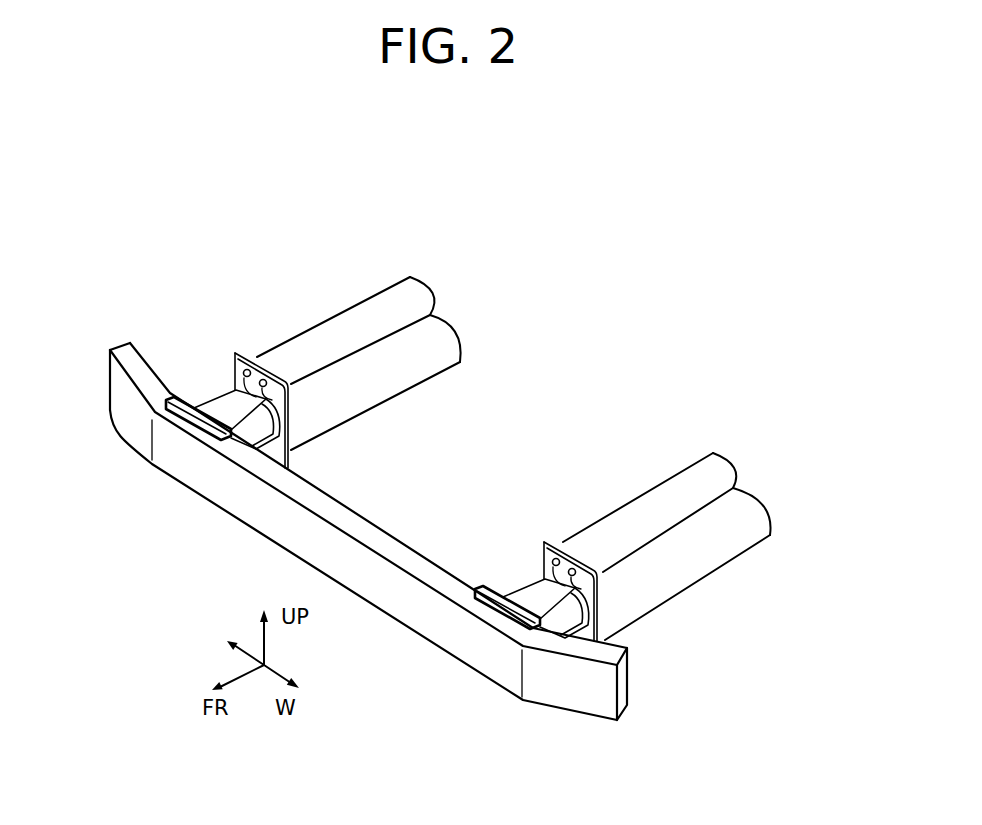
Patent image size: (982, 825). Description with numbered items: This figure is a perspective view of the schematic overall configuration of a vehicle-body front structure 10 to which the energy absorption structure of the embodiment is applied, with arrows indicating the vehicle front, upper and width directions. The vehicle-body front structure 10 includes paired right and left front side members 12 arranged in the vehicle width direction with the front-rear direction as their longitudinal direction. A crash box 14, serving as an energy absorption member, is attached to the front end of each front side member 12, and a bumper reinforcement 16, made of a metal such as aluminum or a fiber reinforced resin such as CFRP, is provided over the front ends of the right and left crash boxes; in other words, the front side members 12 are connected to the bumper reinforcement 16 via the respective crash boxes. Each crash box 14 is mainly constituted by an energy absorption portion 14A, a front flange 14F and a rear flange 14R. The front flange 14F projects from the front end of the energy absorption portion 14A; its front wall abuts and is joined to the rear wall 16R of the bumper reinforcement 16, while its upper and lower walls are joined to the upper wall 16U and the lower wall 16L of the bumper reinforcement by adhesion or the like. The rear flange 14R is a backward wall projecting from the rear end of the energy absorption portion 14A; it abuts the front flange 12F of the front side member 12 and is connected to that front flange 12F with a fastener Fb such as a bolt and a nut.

The vehicle-body front structure 10 is at (598, 352).
The front side member 12 is at (343, 306).
The front flange 12F is at (257, 356).
The crash box 14 is at (410, 472).
The energy absorption portion 14A is at (223, 403).
The front flange 14F is at (178, 402).
The rear flange 14R is at (284, 418).
The bumper reinforcement 16 is at (368, 531).
The upper wall 16U is at (384, 540).
The rear wall 16R is at (356, 507).
The lower wall 16L is at (402, 628).
The fastener Fb is at (262, 397).